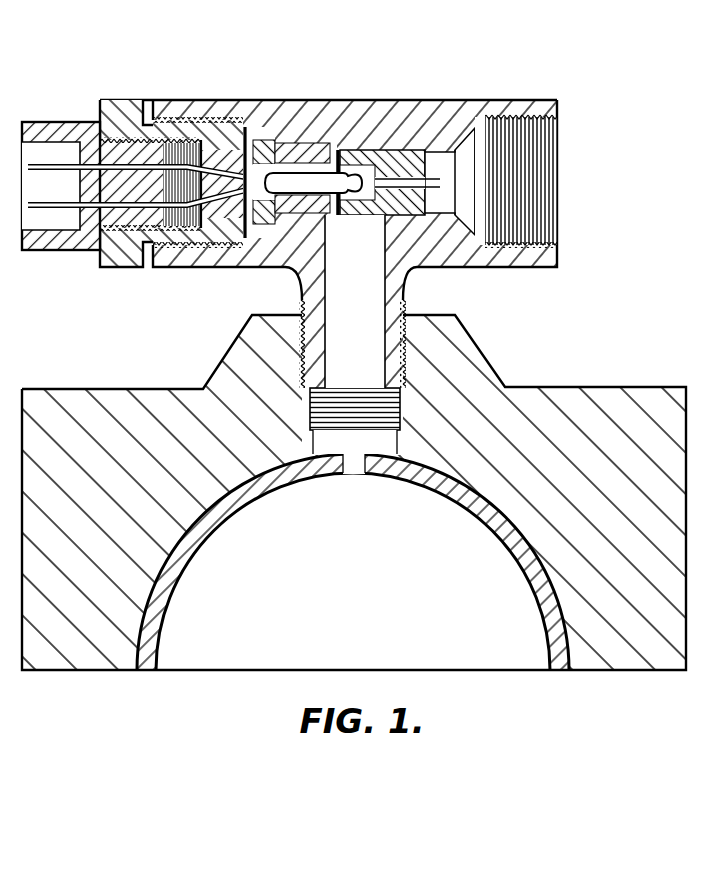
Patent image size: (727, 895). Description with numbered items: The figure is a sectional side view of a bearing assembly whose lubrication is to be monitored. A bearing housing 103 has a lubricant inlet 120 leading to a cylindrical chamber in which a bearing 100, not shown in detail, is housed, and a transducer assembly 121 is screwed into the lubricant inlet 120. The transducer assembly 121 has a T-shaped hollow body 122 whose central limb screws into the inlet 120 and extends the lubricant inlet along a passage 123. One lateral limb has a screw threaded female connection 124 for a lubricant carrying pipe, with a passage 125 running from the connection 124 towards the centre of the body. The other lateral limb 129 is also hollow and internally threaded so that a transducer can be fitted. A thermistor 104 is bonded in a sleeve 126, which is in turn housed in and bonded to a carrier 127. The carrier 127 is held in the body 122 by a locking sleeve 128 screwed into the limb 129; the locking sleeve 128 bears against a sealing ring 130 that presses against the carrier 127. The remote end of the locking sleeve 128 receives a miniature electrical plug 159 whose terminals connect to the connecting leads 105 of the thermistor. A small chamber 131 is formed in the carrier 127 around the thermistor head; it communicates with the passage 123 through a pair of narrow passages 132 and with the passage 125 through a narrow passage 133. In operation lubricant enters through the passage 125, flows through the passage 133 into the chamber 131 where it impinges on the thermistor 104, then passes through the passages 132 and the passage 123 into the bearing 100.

The bearing 100 is at (541, 622).
The bearing housing 103 is at (554, 388).
The thermistor 104 is at (300, 172).
The connecting leads 105 is at (204, 122).
The lubricant inlet 120 is at (410, 403).
The transducer assembly 121 is at (322, 208).
The 'T' shaped hollow body 122 is at (424, 110).
The passage 123 is at (348, 307).
The screw threaded female connection 124 is at (558, 123).
The passage 125 is at (452, 203).
The sleeve 126 is at (292, 128).
The carrier 127 is at (382, 112).
The locking sleeve 128 is at (126, 104).
The lateral limb 129 is at (156, 103).
The sealing ring 130 is at (258, 112).
The small chamber 131 is at (434, 128).
The narrow passages 132 is at (339, 150).
The narrow passage 133 is at (436, 181).
The miniature electrical plug 159 is at (50, 127).